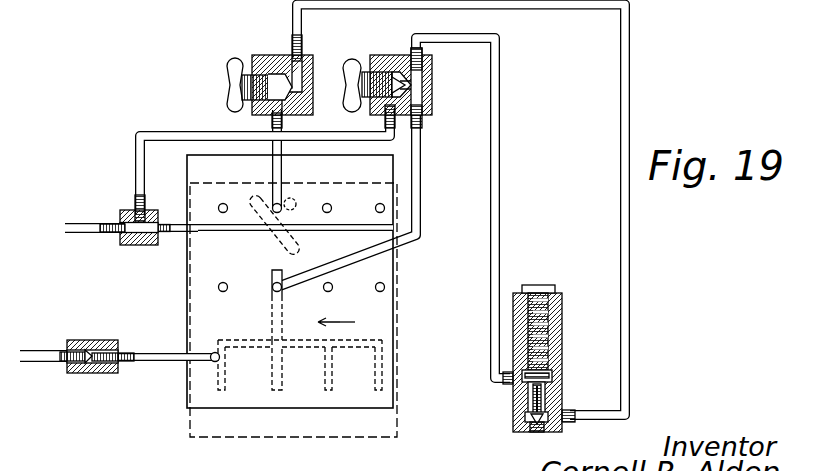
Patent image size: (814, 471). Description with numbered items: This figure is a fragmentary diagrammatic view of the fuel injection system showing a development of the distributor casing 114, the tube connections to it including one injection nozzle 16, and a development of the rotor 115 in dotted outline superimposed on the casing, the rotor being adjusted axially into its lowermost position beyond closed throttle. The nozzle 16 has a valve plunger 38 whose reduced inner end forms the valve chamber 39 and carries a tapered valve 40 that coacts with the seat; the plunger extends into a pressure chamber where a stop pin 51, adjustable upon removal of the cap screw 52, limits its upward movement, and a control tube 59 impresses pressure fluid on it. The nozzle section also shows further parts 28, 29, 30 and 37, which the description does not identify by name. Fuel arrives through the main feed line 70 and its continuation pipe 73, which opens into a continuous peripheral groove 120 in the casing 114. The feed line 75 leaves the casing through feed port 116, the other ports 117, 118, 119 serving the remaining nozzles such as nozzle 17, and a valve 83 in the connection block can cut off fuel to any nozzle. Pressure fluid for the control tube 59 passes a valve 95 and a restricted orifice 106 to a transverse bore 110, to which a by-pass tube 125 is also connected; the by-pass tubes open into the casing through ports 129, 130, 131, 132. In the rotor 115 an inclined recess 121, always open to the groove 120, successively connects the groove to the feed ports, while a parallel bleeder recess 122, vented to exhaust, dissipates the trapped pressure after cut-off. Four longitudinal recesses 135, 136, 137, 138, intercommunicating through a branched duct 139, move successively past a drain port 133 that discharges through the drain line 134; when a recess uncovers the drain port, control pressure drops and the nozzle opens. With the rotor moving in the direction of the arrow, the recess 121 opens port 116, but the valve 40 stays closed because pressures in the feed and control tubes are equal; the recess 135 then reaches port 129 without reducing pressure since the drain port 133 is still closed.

The injection nozzle 16 is at (543, 354).
The injection nozzle 17 is at (632, 284).
The piston head 28 is at (554, 372).
The packing 29 is at (553, 376).
The piston rod 30 is at (548, 388).
The spring 37 is at (540, 433).
The valve plunger 38 is at (535, 402).
The valve chamber 39 is at (527, 418).
The tapered valve 40 is at (518, 428).
The stop pin 51 is at (549, 350).
The cap screw 52 is at (540, 285).
The control tube 59 is at (500, 246).
The main feed line 70 is at (82, 233).
The pipe 73 is at (170, 236).
The feed line 75 is at (270, 127).
The valve 83 is at (227, 76).
The valve 95 is at (352, 60).
The orifice 106 is at (430, 87).
The transverse bore 110 is at (85, 373).
The cylindrical casing 114 is at (190, 172).
The rotor 115 is at (190, 423).
The feed port 116 is at (282, 204).
The feed port 117 is at (331, 210).
The feed port 118 is at (385, 208).
The feed port 119 is at (220, 205).
The peripheral groove 120 is at (208, 224).
The inclined recess 121 is at (282, 247).
The bleeder recess 122 is at (297, 202).
The by-pass tube 125 is at (422, 188).
The peripheral port 129 is at (283, 290).
The peripheral port 130 is at (332, 290).
The peripheral port 131 is at (385, 285).
The peripheral port 132 is at (218, 288).
The drain port 133 is at (210, 360).
The drain line 134 is at (155, 352).
The longitudinal recess 135 is at (283, 384).
The longitudinal recess 136 is at (332, 384).
The longitudinal recess 137 is at (384, 380).
The longitudinal recess 138 is at (222, 388).
The branched duct 139 is at (252, 346).